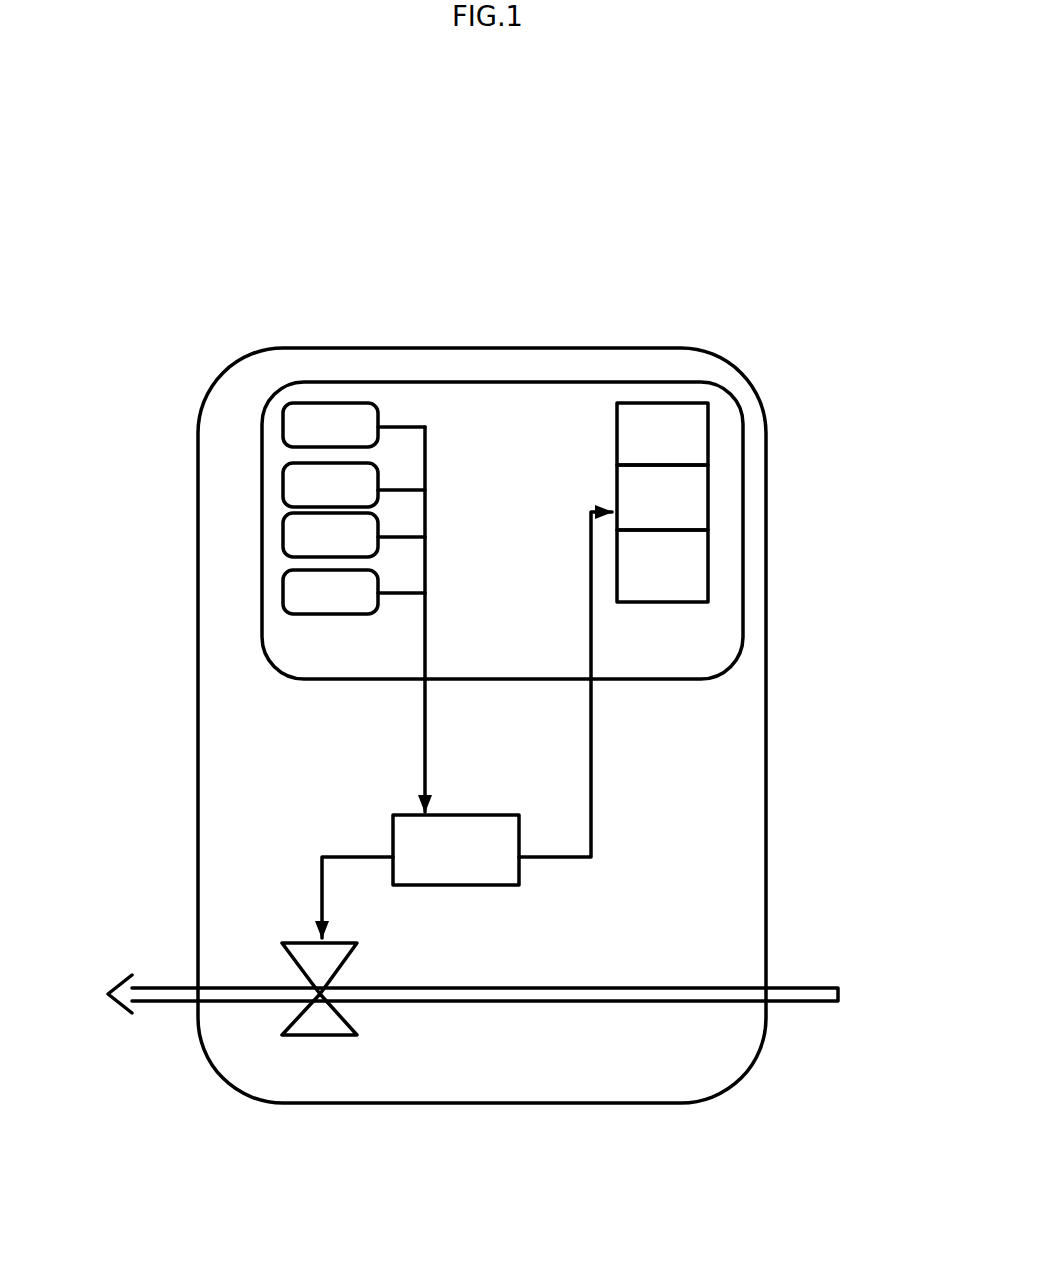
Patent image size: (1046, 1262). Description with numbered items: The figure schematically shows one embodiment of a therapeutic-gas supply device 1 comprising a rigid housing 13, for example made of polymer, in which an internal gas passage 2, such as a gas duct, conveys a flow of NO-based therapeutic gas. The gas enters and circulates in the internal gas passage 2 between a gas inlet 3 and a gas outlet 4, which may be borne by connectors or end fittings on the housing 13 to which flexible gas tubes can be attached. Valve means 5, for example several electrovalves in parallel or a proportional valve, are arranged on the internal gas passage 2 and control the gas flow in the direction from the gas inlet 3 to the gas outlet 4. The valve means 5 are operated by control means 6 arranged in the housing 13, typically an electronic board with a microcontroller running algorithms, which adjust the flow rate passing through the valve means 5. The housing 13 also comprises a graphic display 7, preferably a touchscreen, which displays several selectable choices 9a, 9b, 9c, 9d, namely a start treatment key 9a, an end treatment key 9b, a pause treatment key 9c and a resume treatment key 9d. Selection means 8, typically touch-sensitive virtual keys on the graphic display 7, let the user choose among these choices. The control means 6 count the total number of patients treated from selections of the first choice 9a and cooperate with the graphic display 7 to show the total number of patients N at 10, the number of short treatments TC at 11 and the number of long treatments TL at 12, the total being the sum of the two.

The therapeutic-gas supply device 1 is at (828, 249).
The internal gas passage 2 is at (556, 996).
The gas inlet 3 is at (778, 1013).
The gas outlet 4 is at (182, 1015).
The valve means 5 is at (316, 1032).
The control means 6 is at (430, 840).
The graphic display 7 is at (533, 420).
The selection means 8 is at (269, 386).
The first given choice 9a is at (297, 432).
The second given choice 9b is at (297, 488).
The third given choice 9c is at (293, 537).
The fourth given choice 9d is at (293, 595).
The display of total number of patients treated 10 is at (690, 430).
The display of number of short treatments 11 is at (680, 491).
The display of number of long treatments 12 is at (685, 576).
The housing 13 is at (768, 690).